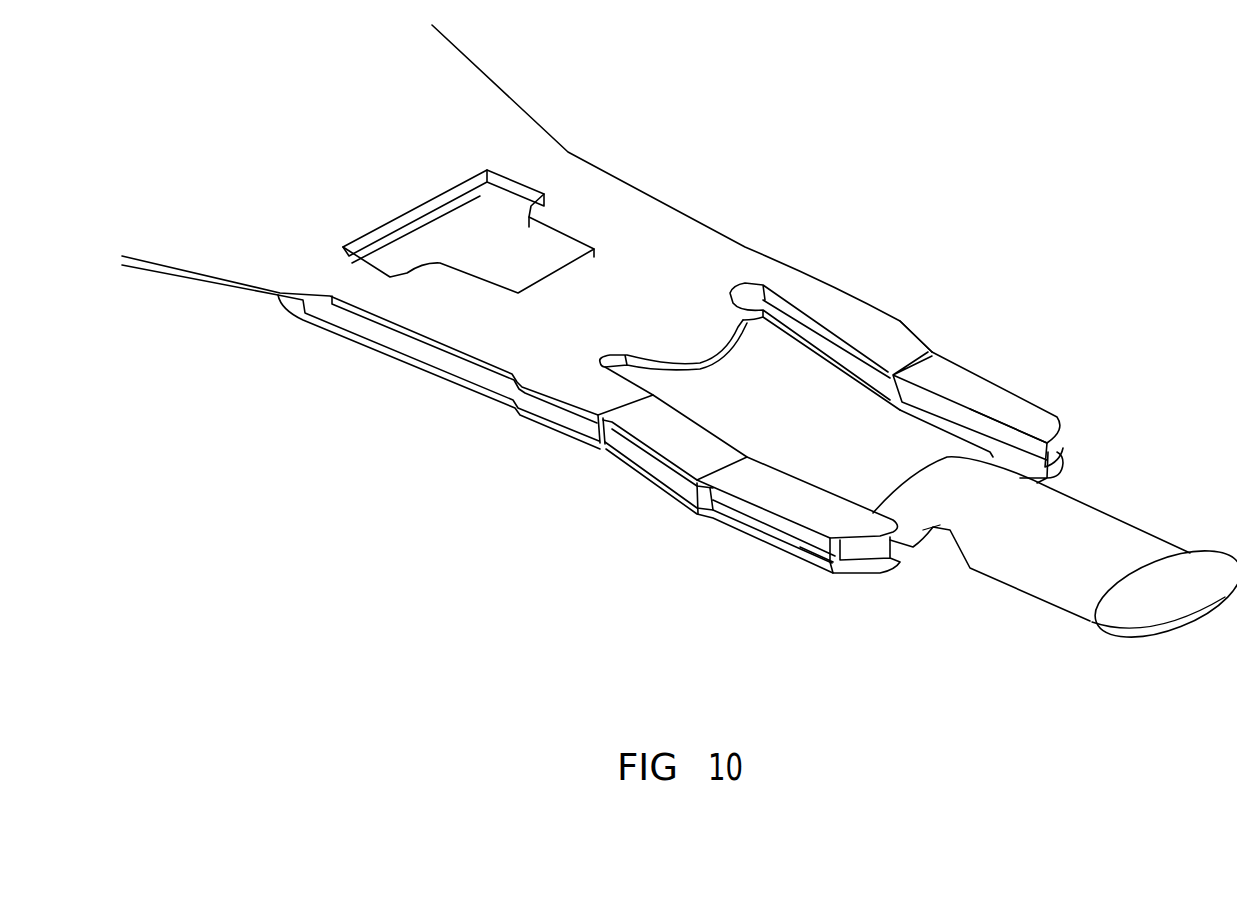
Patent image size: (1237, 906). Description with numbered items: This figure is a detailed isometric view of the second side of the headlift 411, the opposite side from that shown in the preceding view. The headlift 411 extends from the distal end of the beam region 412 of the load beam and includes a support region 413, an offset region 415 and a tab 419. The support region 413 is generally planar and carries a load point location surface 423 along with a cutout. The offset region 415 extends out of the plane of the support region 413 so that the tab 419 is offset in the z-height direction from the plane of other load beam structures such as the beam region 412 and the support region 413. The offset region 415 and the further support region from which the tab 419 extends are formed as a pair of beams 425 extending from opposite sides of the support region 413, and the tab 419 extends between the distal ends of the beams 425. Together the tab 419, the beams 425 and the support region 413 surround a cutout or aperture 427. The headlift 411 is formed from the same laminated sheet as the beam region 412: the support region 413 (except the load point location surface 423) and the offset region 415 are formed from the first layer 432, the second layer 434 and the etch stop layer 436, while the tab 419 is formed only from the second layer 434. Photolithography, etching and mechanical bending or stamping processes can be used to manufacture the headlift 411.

The headlift 411 is at (1033, 334).
The beam region 412 is at (1073, 400).
The support region 413 is at (807, 248).
The offset region 415 is at (960, 340).
The tab 419 is at (1040, 603).
The load point location surface 423 is at (680, 327).
The beams 425 is at (658, 480).
The cutout or aperture 427 is at (817, 422).
The first layer 432 is at (618, 220).
The second layer 434 is at (433, 377).
The etch stop layer 436 is at (1057, 453).